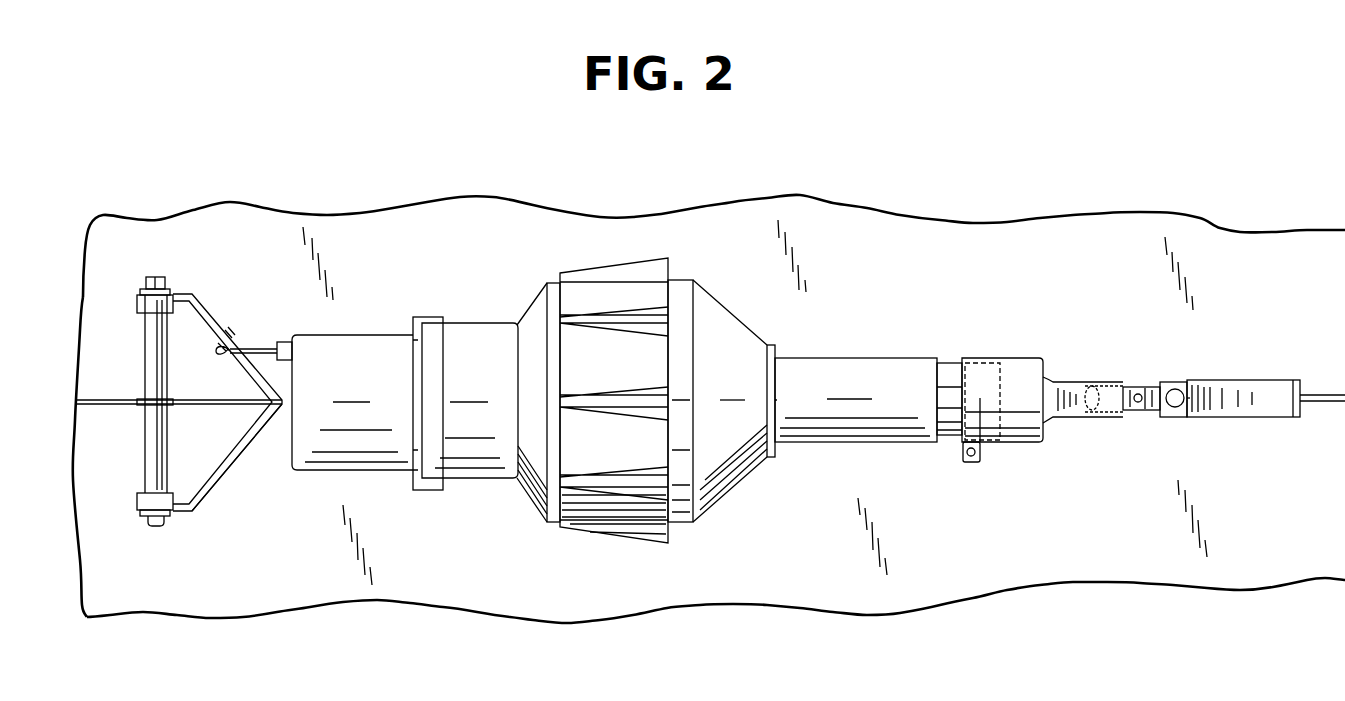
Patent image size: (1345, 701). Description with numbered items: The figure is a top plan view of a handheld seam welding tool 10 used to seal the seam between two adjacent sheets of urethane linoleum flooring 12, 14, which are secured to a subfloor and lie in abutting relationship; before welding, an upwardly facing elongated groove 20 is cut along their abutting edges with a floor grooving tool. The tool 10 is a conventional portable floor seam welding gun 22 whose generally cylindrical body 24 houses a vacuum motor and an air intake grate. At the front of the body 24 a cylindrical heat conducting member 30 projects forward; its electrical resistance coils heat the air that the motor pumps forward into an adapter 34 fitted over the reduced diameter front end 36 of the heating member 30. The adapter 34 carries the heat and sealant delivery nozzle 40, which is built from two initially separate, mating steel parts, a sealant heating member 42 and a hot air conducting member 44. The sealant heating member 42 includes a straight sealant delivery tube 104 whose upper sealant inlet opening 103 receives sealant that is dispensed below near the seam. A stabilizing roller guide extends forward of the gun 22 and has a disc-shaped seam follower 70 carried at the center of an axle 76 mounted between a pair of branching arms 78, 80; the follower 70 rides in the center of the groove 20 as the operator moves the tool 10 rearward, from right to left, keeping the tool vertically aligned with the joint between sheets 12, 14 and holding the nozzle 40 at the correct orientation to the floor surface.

The handheld seam welding tool 10 is at (832, 472).
The urethane linoleum flooring sheet 12 is at (1205, 250).
The urethane linoleum flooring sheet 14 is at (1075, 562).
The elongated groove 20 is at (108, 407).
The floor seam welding gun 22 is at (607, 545).
The body 24 is at (377, 348).
The heat conducting member 30 is at (852, 363).
The adapter 34 is at (1020, 352).
The reduced diameter front end 36 is at (950, 368).
The nozzle 40 is at (1225, 358).
The sealant heating member 42 is at (1253, 378).
The hot air conducting member 44 is at (1148, 380).
The disc-shaped seam follower 70 is at (142, 398).
The axle 76 is at (162, 442).
The branching arm 78 is at (207, 298).
The branching arm 80 is at (223, 485).
The sealant inlet opening 103 is at (1168, 407).
The sealant delivery tube 104 is at (1258, 403).